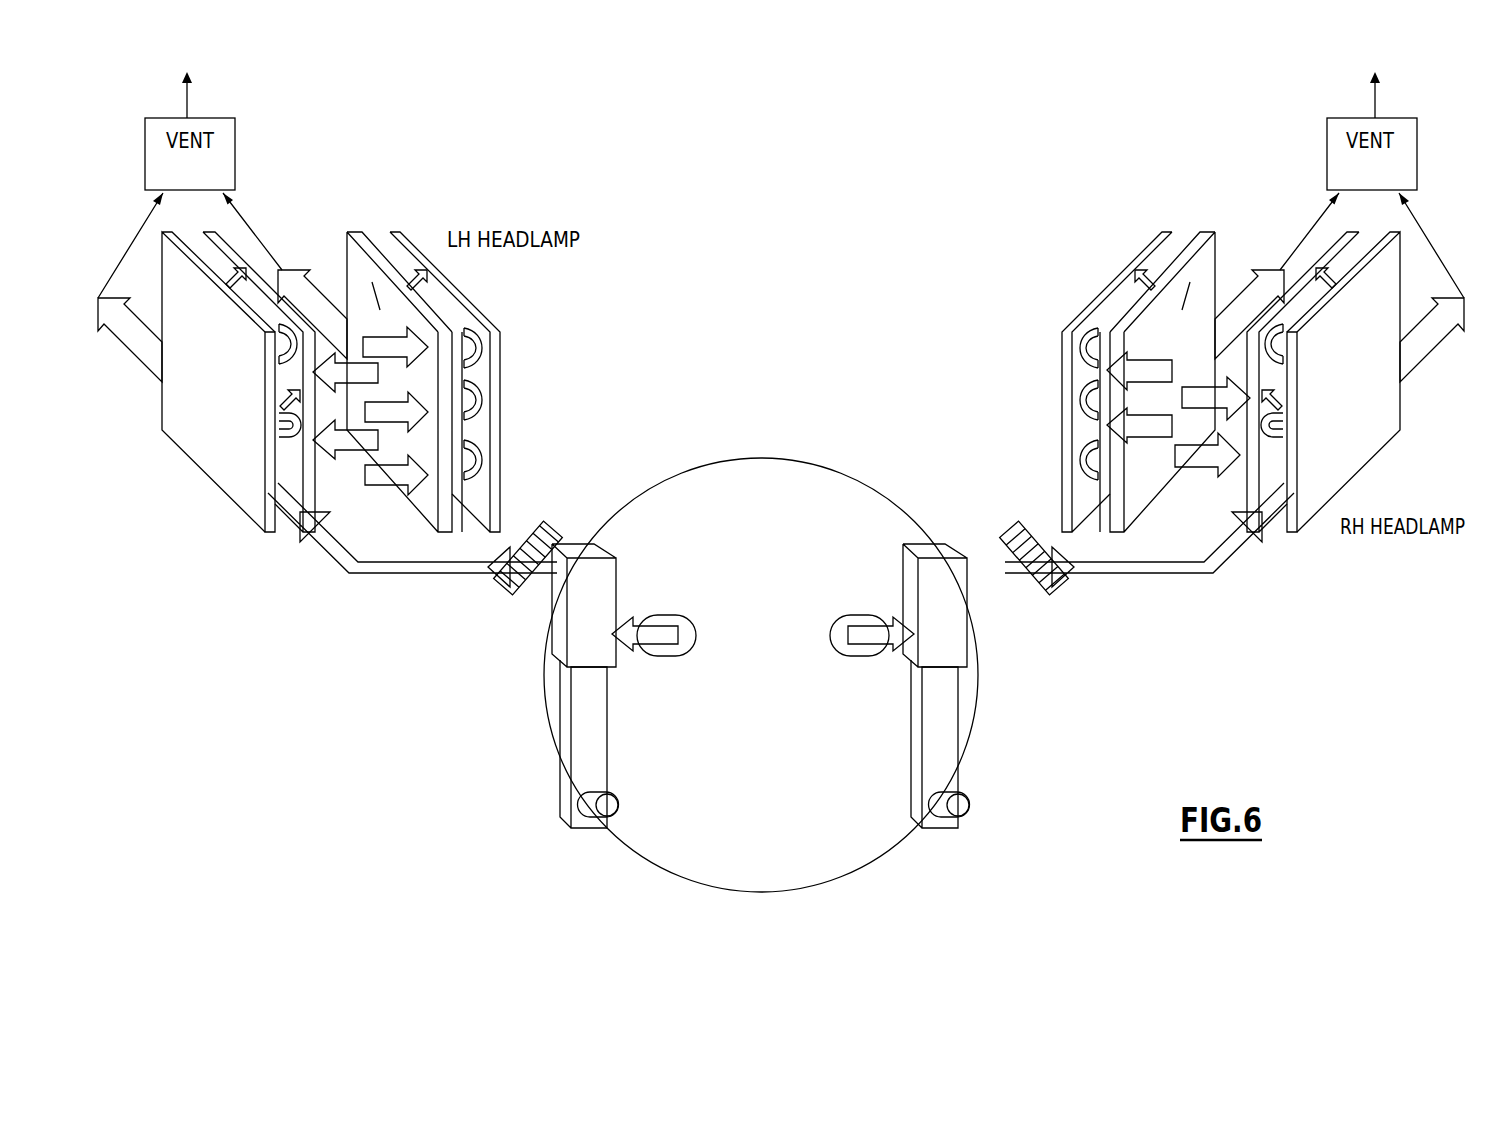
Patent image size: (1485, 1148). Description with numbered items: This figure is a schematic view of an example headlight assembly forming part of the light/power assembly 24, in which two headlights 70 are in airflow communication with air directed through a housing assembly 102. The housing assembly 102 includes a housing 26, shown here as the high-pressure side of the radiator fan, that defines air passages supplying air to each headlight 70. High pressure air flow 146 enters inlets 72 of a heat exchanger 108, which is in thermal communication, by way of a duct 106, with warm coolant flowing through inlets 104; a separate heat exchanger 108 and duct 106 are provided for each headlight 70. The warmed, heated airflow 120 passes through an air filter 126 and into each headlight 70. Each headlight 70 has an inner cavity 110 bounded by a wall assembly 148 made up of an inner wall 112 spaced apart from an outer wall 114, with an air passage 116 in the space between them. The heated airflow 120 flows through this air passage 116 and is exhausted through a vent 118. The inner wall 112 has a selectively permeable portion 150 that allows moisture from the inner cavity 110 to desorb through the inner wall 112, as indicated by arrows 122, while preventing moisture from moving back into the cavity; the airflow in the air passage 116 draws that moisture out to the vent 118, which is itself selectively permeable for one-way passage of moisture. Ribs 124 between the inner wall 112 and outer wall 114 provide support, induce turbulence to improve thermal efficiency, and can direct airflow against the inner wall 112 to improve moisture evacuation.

The light/power assembly 24 is at (871, 255).
The housing 26 is at (735, 855).
The headlights 70 is at (285, 608).
The inlets 72 is at (685, 629).
The housing assembly 102 is at (802, 425).
The inlets 104 is at (603, 810).
The duct 106 is at (590, 727).
The heat exchanger 108 is at (605, 576).
The inner cavity 110 is at (417, 410).
The inner wall 112 is at (458, 347).
The outer wall 114 is at (495, 356).
The air passage 116 is at (482, 450).
The vent 118 is at (206, 184).
The heated airflow 120 is at (452, 576).
The arrows 122 is at (1117, 375).
The ribs 124 is at (282, 426).
The air filter 126 is at (546, 513).
The high pressure air flow 146 is at (645, 632).
The wall assembly 148 is at (400, 232).
The selectively permeable portion 150 is at (380, 310).